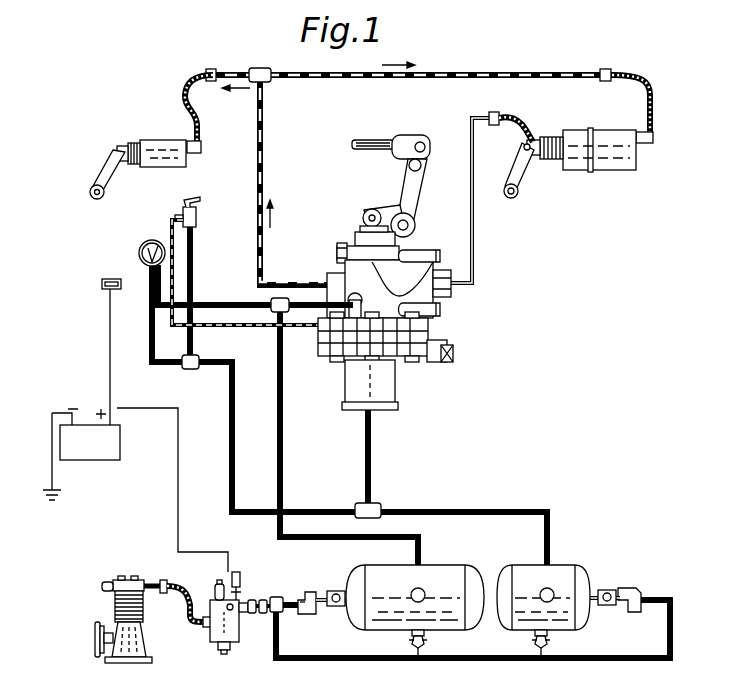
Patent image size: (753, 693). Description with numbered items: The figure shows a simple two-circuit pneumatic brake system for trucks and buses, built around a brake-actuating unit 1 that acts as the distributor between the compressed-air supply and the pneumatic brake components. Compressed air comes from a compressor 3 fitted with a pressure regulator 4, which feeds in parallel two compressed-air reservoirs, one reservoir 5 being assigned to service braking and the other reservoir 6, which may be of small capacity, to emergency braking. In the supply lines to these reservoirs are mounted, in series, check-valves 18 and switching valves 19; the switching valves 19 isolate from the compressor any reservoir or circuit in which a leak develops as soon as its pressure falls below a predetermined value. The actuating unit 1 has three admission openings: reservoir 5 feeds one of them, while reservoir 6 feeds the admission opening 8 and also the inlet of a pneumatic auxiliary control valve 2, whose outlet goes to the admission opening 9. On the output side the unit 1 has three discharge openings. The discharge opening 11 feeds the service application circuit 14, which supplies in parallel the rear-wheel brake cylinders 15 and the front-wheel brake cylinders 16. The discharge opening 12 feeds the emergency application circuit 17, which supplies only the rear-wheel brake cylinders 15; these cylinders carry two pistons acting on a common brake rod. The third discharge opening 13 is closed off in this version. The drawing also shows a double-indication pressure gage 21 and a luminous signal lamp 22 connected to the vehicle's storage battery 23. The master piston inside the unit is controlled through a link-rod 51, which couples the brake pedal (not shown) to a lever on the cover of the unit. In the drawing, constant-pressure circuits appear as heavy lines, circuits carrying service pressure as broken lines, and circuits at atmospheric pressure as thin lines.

The brake-actuating unit 1 is at (432, 327).
The pneumatic auxiliary control valve 2 is at (196, 216).
The compressor 3 is at (118, 612).
The pressure regulator 4 is at (230, 630).
The compressed-air reservoir 5 is at (435, 618).
The compressed-air reservoir 6 is at (558, 618).
The compressed-air admission opening 8 is at (385, 408).
The compressed-air admission opening 9 is at (317, 331).
The discharge opening 11 is at (326, 281).
The discharge opening 12 is at (451, 285).
The discharge opening 13 is at (454, 355).
The service application circuit 14 is at (246, 72).
The rear-wheel brake cylinder 15 is at (619, 155).
The front-wheel brake cylinder 16 is at (150, 160).
The emergency application circuit 17 is at (473, 222).
The check-valve 18 is at (311, 614).
The switching valve 19 is at (333, 589).
The double-indication pressure gage 21 is at (138, 252).
The luminous signal lamp 22 is at (100, 284).
The storage battery 23 is at (121, 447).
The link-rod 51 is at (363, 151).